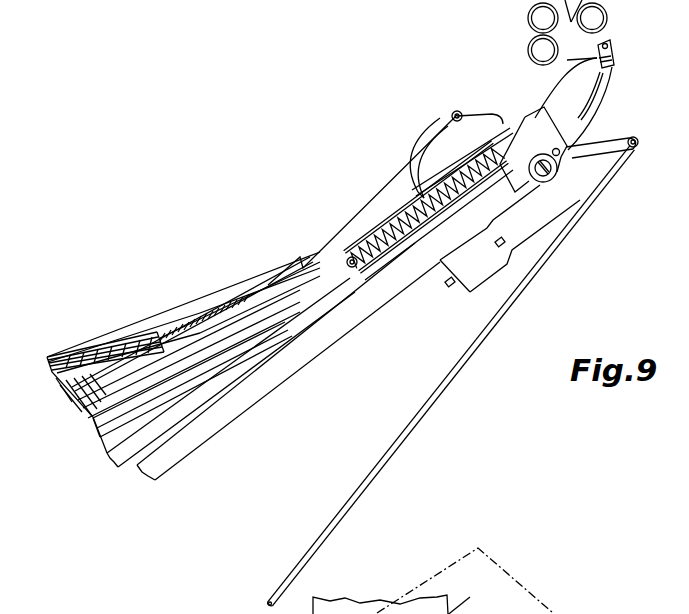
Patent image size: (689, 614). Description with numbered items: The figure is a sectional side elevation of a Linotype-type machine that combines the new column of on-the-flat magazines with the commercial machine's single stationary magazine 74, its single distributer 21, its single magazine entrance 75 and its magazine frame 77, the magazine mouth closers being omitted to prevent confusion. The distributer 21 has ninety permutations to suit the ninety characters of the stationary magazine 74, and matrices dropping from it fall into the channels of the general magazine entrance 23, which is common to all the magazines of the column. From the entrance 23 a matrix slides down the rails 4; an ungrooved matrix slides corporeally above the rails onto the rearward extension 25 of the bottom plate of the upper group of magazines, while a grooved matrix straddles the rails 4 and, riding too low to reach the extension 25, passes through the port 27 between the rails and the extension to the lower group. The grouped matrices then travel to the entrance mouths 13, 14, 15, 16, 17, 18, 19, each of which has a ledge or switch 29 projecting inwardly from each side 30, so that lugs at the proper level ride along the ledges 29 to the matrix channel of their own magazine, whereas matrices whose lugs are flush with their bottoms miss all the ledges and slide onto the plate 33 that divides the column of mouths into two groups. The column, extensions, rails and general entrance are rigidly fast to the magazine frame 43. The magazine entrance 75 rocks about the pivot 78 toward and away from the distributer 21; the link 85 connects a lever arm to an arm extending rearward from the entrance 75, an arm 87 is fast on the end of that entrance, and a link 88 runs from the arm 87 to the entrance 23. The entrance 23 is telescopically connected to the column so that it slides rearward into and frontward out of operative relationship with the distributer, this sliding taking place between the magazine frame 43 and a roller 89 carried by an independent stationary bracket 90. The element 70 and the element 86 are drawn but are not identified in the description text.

The rails 4 is at (285, 278).
The entrance mouth 13 is at (87, 352).
The entrance mouth 14 is at (108, 353).
The entrance mouth 15 is at (128, 352).
The entrance mouth 16 is at (143, 347).
The entrance mouth 17 is at (70, 392).
The entrance mouth 18 is at (80, 423).
The entrance mouth 19 is at (88, 422).
The distributer 21 is at (567, 32).
The general magazine entrance 23 is at (462, 203).
The rearward extension 25 is at (212, 305).
The port 27 is at (258, 288).
The ledge or switch 29 is at (52, 372).
The side of entrance mouth 30 is at (182, 317).
The plate 33 is at (63, 382).
The magazine frame 43 is at (268, 300).
The bar 70 is at (103, 387).
The stationary magazine 74 is at (348, 223).
The magazine entrance 75 is at (573, 104).
The magazine frame 77 is at (297, 373).
The pivot 78 is at (545, 182).
The link 85 is at (440, 392).
The link 86 is at (585, 150).
The arm 87 is at (572, 135).
The link 88 is at (503, 132).
The roller 89 is at (457, 111).
The bracket 90 is at (427, 153).